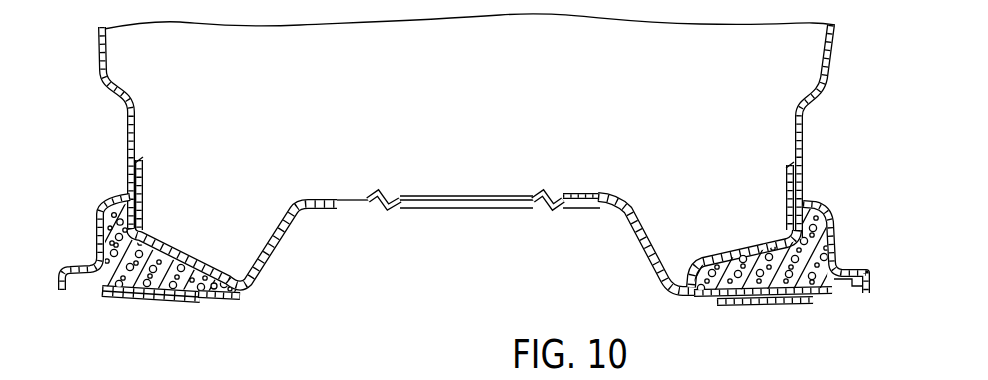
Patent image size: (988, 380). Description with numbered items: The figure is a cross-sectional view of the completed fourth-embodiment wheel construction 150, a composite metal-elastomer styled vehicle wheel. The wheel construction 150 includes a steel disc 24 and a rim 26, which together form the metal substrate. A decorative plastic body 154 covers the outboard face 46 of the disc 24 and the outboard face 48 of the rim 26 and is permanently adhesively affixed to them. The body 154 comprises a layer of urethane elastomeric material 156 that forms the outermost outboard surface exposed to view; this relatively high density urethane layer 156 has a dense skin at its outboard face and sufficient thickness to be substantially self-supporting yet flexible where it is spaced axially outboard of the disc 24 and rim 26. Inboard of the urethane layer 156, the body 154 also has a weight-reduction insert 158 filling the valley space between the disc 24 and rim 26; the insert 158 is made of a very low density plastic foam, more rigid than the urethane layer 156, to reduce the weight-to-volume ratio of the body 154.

The steel disc 24 is at (279, 190).
The rim 26 is at (120, 130).
The outboard face of the disc 46 is at (162, 250).
The outboard face of the rim 48 is at (106, 227).
The wheel construction 150 is at (120, 172).
The decorative plastic body 154 is at (114, 306).
The layer of urethane elastomeric material 156 is at (213, 308).
The weight-reduction insert 158 is at (161, 306).